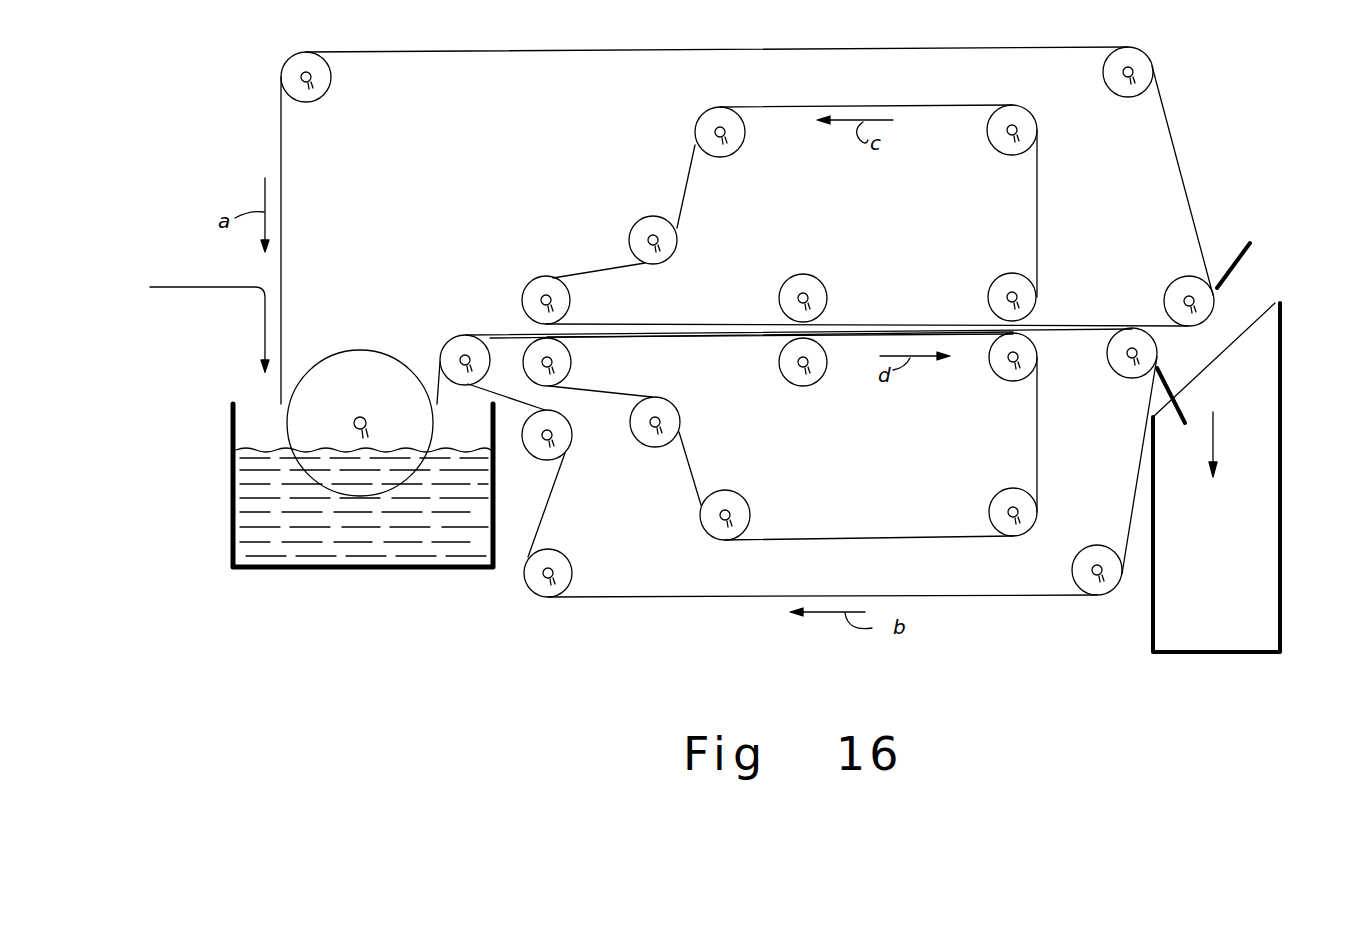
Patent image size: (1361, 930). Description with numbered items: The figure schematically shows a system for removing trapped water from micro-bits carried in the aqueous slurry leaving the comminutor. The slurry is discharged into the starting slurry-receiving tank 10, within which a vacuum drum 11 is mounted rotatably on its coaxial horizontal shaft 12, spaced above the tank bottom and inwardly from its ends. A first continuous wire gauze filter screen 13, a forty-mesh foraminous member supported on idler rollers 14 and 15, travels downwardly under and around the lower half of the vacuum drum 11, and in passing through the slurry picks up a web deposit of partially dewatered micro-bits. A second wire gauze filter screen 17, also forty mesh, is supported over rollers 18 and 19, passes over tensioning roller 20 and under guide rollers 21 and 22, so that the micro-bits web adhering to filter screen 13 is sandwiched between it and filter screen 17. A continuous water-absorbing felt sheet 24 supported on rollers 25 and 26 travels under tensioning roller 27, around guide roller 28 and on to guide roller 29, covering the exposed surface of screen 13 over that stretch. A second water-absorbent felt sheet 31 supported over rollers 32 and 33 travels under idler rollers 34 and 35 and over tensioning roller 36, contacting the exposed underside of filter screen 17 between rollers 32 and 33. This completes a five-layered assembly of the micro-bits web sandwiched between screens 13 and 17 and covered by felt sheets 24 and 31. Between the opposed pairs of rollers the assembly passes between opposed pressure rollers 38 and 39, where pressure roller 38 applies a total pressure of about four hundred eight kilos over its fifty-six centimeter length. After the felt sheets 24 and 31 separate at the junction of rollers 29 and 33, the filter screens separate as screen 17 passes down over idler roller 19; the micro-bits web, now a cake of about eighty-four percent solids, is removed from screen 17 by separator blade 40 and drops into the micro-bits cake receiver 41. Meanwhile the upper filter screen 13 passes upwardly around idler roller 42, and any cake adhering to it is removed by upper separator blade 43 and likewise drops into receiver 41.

The starting slurry-receiving tank 10 is at (233, 470).
The vacuum drum 11 is at (375, 399).
The horizontal shaft 12 is at (358, 423).
The first continuous wire gauze filter screen 13 is at (703, 48).
The idler roller 14 is at (1130, 56).
The idler roller 15 is at (303, 60).
The second wire gauze filter screen 17 is at (710, 600).
The roller 18 is at (460, 345).
The roller 19 is at (1112, 368).
The tensioning roller 20 is at (565, 450).
The guide roller 21 is at (545, 597).
The guide roller 22 is at (1097, 595).
The continuous water-absorbing felt sheet 24 is at (865, 107).
The roller 25 is at (1030, 128).
The roller 26 is at (710, 112).
The tensioning roller 27 is at (640, 222).
The guide roller 28 is at (528, 288).
The guide roller 29 is at (1000, 280).
The second water-absorbent felt sheet 31 is at (1037, 430).
The roller 32 is at (573, 371).
The roller 33 is at (998, 375).
The idler roller 34 is at (1000, 500).
The idler roller 35 is at (745, 507).
The tensioning roller 36 is at (653, 446).
The pressure roller 38 is at (806, 280).
The pressure roller 39 is at (792, 375).
The separator blade 40 is at (1167, 384).
The micro-bits cake receiver 41 is at (1280, 384).
The idler roller 42 is at (1170, 285).
The upper separator blade 43 is at (1238, 245).